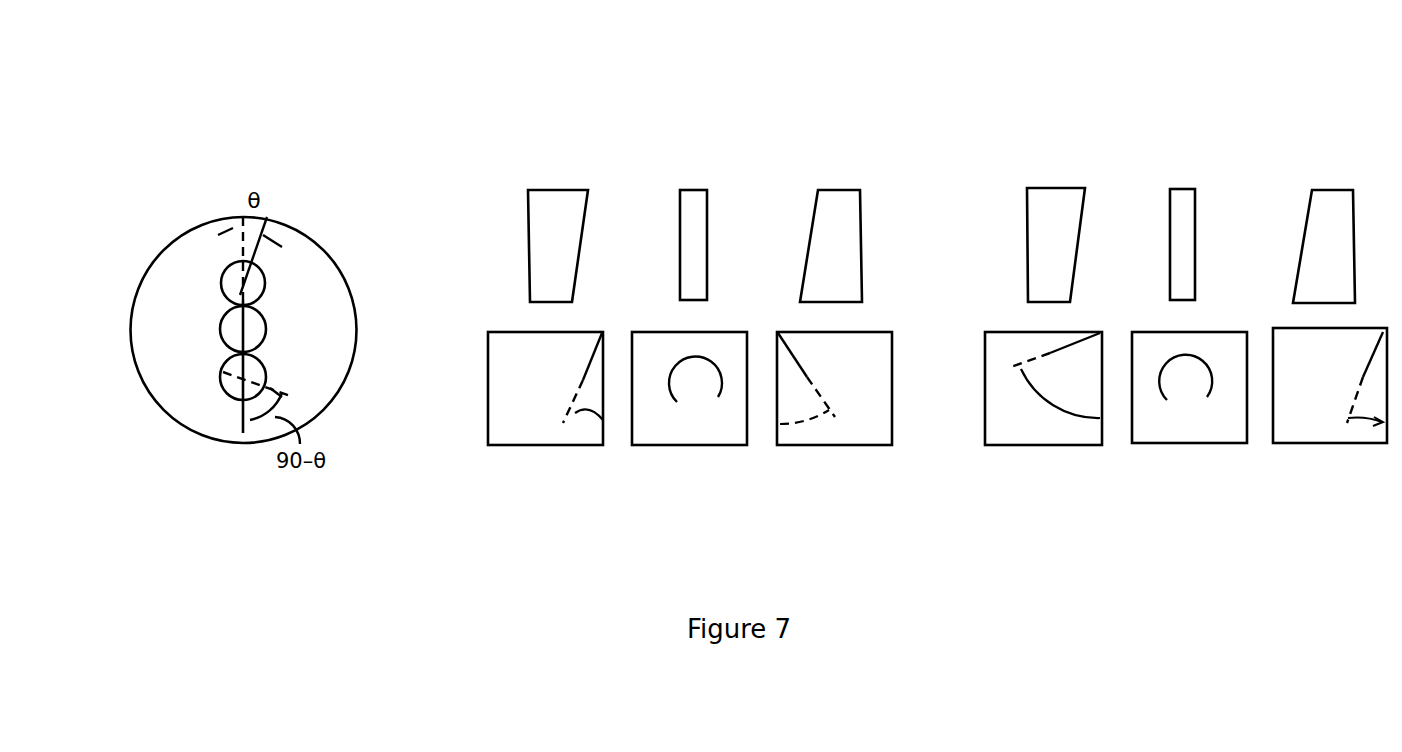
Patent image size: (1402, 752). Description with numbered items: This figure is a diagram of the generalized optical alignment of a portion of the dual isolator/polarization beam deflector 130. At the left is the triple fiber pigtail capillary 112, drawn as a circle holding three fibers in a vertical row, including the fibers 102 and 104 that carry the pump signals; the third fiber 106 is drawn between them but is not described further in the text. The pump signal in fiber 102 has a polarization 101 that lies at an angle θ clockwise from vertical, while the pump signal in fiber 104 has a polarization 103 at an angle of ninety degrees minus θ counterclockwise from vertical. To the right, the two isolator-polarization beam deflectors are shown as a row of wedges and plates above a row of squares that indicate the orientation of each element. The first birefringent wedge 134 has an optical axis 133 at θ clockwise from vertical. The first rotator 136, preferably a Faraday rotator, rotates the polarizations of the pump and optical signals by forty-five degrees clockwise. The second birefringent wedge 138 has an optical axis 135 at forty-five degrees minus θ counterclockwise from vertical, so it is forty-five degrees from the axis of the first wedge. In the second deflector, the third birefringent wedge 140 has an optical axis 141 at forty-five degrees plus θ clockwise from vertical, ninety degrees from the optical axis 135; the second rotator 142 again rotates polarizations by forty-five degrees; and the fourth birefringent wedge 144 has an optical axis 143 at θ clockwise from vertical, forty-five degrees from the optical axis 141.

The polarization 101 is at (237, 293).
The fiber 102 is at (267, 293).
The polarization 103 is at (217, 373).
The fiber 104 is at (268, 373).
The second light beam / light source 106 is at (217, 327).
The triple fiber pigtail capillary 112 is at (340, 265).
The dual isolator/polarization beam deflector 130 is at (928, 297).
The optical axis of the first birefringent wedge 133 is at (585, 390).
The first birefringent wedge 134 is at (528, 228).
The optical axis of the second birefringent wedge 135 is at (805, 372).
The first rotator 136 is at (682, 228).
The second birefringent wedge 138 is at (807, 228).
The third birefringent wedge 140 is at (1027, 228).
The optical axis of the third birefringent wedge 141 is at (1052, 353).
The second rotator 142 is at (1172, 228).
The optical axis of the fourth birefringent wedge 143 is at (1365, 373).
The fourth birefringent wedge 144 is at (1303, 228).